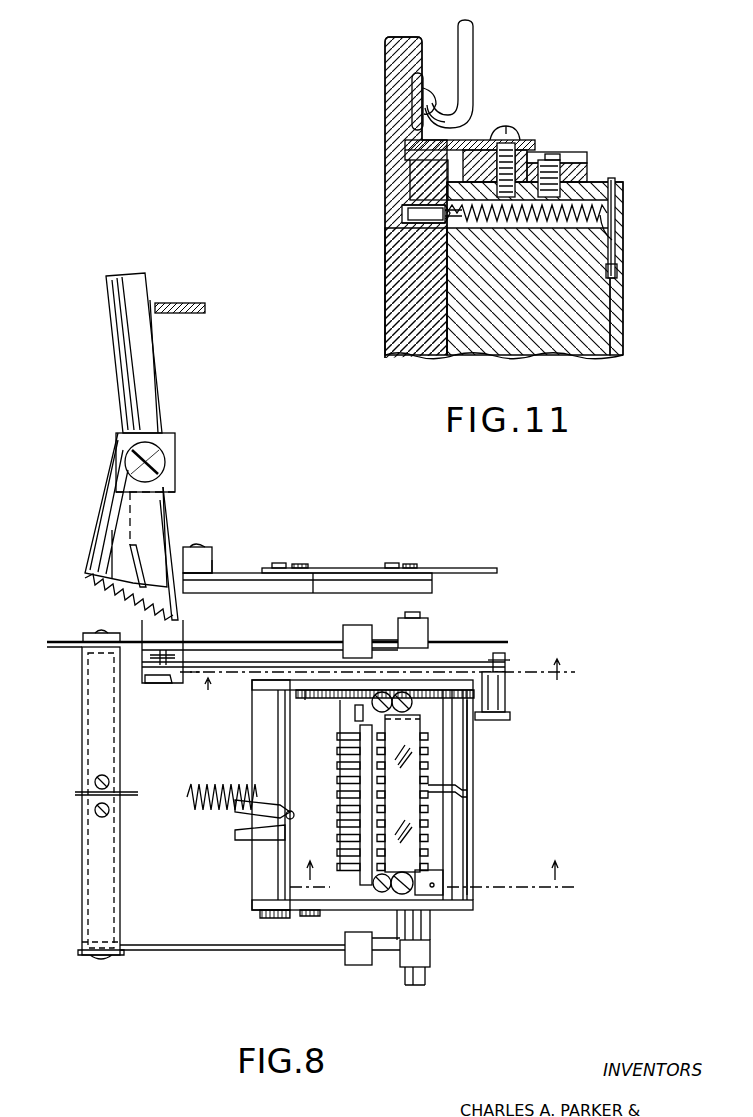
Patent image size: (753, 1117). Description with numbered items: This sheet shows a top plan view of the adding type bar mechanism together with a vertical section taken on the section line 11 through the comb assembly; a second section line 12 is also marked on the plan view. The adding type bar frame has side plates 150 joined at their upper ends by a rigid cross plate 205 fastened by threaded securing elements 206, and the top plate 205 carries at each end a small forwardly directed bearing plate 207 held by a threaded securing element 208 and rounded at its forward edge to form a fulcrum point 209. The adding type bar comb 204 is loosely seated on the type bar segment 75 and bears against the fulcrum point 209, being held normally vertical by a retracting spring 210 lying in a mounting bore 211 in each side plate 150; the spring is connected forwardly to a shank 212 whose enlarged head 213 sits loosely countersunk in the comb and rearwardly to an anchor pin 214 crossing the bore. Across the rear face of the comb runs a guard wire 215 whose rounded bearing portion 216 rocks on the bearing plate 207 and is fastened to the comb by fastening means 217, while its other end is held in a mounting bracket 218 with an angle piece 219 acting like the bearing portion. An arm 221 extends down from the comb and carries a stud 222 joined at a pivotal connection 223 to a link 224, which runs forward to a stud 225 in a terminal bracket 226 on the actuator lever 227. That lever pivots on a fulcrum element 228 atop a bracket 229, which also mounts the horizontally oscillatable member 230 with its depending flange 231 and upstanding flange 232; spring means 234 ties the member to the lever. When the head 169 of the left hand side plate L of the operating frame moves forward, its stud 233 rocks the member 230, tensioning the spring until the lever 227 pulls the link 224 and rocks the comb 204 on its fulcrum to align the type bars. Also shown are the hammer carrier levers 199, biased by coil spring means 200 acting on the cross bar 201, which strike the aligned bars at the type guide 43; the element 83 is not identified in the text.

In FIG. 11, the adding type bar comb 204 is at (390, 58).
In FIG. 8, the adding type bar comb 204 is at (345, 722).
In FIG. 11, the fastening means 217 is at (420, 96).
In FIG. 11, the guard wire 215 is at (475, 20).
In FIG. 11, the rounded bearing portion 216 is at (455, 120).
In FIG. 11, the bearing plate 207 is at (462, 140).
In FIG. 8, the bearing plate 207 is at (430, 690).
In FIG. 11, the threaded securing element 208 is at (516, 134).
In FIG. 11, the threaded securing element 206 is at (551, 165).
In FIG. 8, the threaded securing element 206 is at (415, 875).
In FIG. 11, the cross plate 205 is at (588, 155).
In FIG. 8, the cross plate 205 is at (412, 762).
In FIG. 11, the fulcrum point 209 is at (410, 152).
In FIG. 11, the retracting spring 210 is at (610, 202).
In FIG. 11, the enlarged head 213 is at (392, 206).
In FIG. 11, the shank 212 is at (404, 226).
In FIG. 11, the mounting bore 211 is at (618, 236).
In FIG. 11, the anchor pin 214 is at (620, 272).
In FIG. 8, the anchor pin 214 is at (435, 885).
In FIG. 11, the type bar segment 75 is at (388, 322).
In FIG. 11, the side plate 150 is at (620, 326).
In FIG. 8, the actuator lever 227 is at (148, 345).
In FIG. 8, the bracket 229 is at (175, 440).
In FIG. 8, the fulcrum element 228 is at (166, 462).
In FIG. 8, the horizontally oscillatable member 230 is at (107, 508).
In FIG. 8, the depending flange 231 is at (143, 545).
In FIG. 8, the upstanding flange 232 is at (185, 547).
In FIG. 8, the stud 233 is at (205, 555).
In FIG. 8, the spring means 234 is at (115, 608).
In FIG. 8, the left hand side plate L is at (460, 568).
In FIG. 8, the head 169 is at (236, 587).
In FIG. 8, the frame plate 83 is at (279, 642).
In FIG. 8, the stud 225 is at (172, 658).
In FIG. 8, the terminal bracket 226 is at (155, 685).
In FIG. 8, the link 224 is at (228, 672).
In FIG. 8, the section line 12- 12 is at (377, 692).
In FIG. 8, the hammer carrier lever 199 is at (313, 910).
In FIG. 8, the mounting bracket 218 is at (356, 690).
In FIG. 8, the angle piece 219 is at (356, 712).
In FIG. 8, the pivotal connection 223 is at (498, 658).
In FIG. 8, the stud 222 is at (505, 712).
In FIG. 8, the arm 221 is at (475, 720).
In FIG. 8, the coil spring means 200 is at (189, 790).
In FIG. 8, the cross bar 201 is at (465, 830).
In FIG. 8, the type guide 43 is at (242, 840).
In FIG. 8, the section line 11- 11 is at (432, 861).